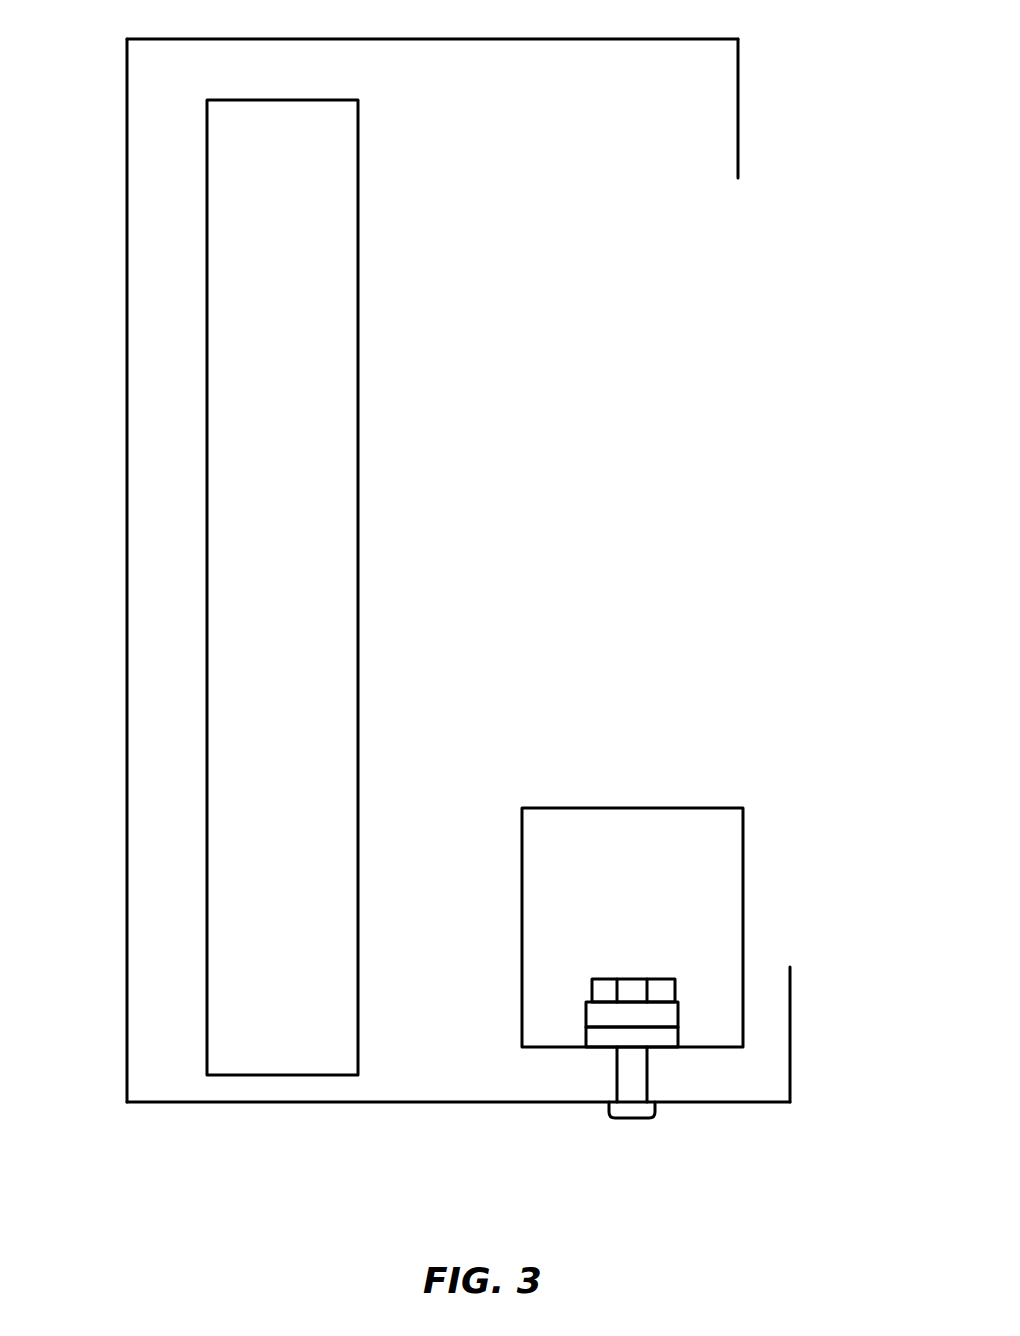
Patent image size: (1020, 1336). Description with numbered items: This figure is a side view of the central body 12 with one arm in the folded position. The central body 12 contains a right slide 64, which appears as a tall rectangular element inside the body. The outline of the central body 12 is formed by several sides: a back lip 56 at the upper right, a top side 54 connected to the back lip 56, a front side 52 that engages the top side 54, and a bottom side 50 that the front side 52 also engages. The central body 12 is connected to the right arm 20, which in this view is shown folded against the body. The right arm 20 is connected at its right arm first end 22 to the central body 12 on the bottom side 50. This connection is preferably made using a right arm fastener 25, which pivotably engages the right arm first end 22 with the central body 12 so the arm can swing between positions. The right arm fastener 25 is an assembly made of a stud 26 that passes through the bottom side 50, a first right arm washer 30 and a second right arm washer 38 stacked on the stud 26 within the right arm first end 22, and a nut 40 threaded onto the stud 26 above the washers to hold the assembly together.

The central body 12 is at (463, 571).
The right arm 20 is at (669, 957).
The right arm first end 22 is at (743, 808).
The right arm fastener 25 is at (632, 1120).
The stud 26 is at (625, 1058).
The first right arm washer 30 is at (586, 1034).
The second right arm washer 38 is at (586, 1013).
The nut 40 is at (592, 986).
The bottom side 50 is at (420, 1103).
The front side 52 is at (127, 569).
The top side 54 is at (433, 38).
The back lip 56 is at (740, 108).
The right slide 64 is at (358, 590).